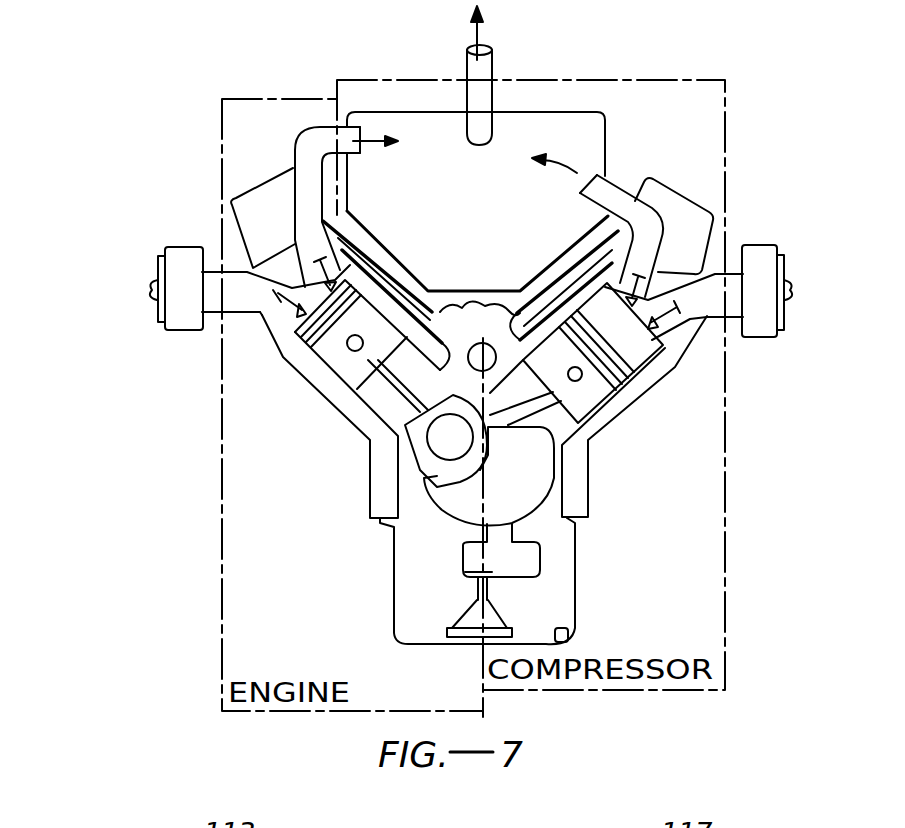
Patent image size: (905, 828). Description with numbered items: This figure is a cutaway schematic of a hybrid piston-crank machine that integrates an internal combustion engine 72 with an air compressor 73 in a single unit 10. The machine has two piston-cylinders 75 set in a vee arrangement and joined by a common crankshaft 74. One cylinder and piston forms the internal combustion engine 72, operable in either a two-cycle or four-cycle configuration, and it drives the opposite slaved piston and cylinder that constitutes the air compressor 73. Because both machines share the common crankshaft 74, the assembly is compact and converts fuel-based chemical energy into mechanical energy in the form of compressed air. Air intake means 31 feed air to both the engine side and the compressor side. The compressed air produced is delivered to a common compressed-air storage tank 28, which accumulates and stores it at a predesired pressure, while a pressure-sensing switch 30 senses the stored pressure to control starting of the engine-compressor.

The engine 10 is at (222, 510).
The compressed-air storage tank 28 is at (606, 137).
The pressure-sensing switch 30 is at (727, 170).
The air intake means 31 is at (120, 291).
The internal combustion engine 72 is at (303, 383).
The air compressor 73 is at (638, 398).
The common crankshaft 74 is at (522, 505).
The piston-cylinders 75 is at (345, 372).